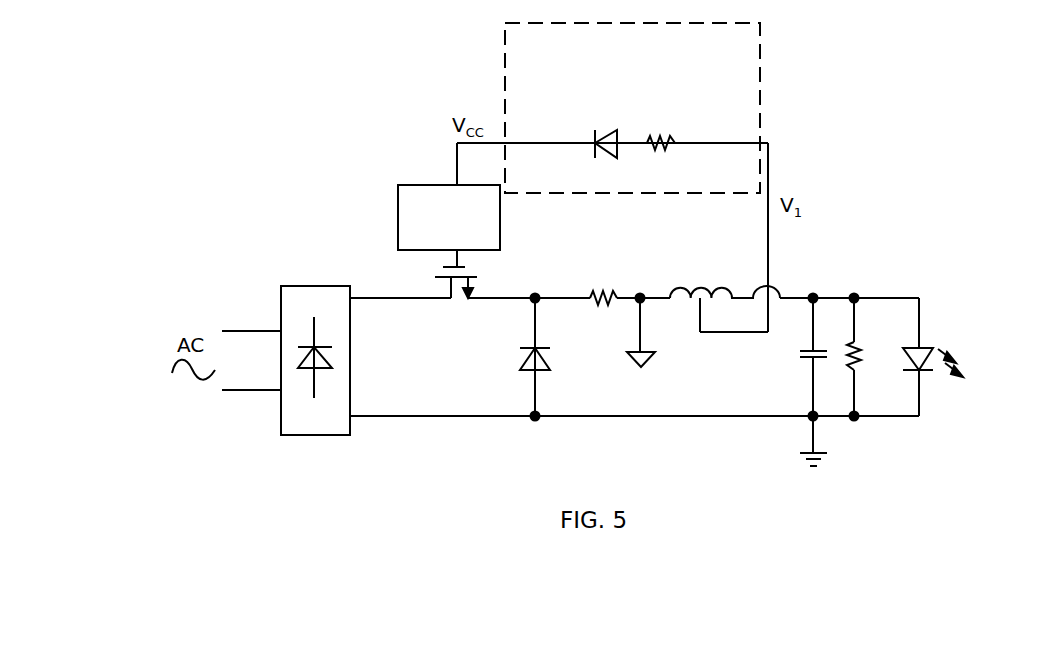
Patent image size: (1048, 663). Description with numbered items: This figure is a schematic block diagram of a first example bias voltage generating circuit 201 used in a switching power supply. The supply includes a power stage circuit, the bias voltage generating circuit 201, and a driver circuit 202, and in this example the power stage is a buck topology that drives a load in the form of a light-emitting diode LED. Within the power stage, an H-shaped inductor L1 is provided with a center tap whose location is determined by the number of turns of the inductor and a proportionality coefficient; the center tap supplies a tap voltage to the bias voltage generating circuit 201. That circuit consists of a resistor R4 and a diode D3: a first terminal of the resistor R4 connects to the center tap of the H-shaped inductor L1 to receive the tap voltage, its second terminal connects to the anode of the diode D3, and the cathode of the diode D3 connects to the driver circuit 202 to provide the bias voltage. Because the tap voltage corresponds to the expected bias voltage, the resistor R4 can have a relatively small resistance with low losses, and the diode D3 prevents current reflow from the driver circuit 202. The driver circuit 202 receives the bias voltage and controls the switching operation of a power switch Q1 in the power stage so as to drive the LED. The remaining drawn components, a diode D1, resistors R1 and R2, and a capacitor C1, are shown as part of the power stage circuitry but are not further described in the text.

The bias voltage generating circuit 201 is at (750, 81).
The driver circuit 202 is at (397, 208).
The power switch Q1 is at (456, 290).
The diode D1 is at (554, 357).
The diode D3 is at (606, 131).
The resistor R1 is at (607, 287).
The resistor R2 is at (870, 357).
The resistor R4 is at (662, 130).
The H-shaped inductor L1 is at (725, 297).
The capacitor C1 is at (799, 357).
The light-emitting diode LED is at (952, 357).